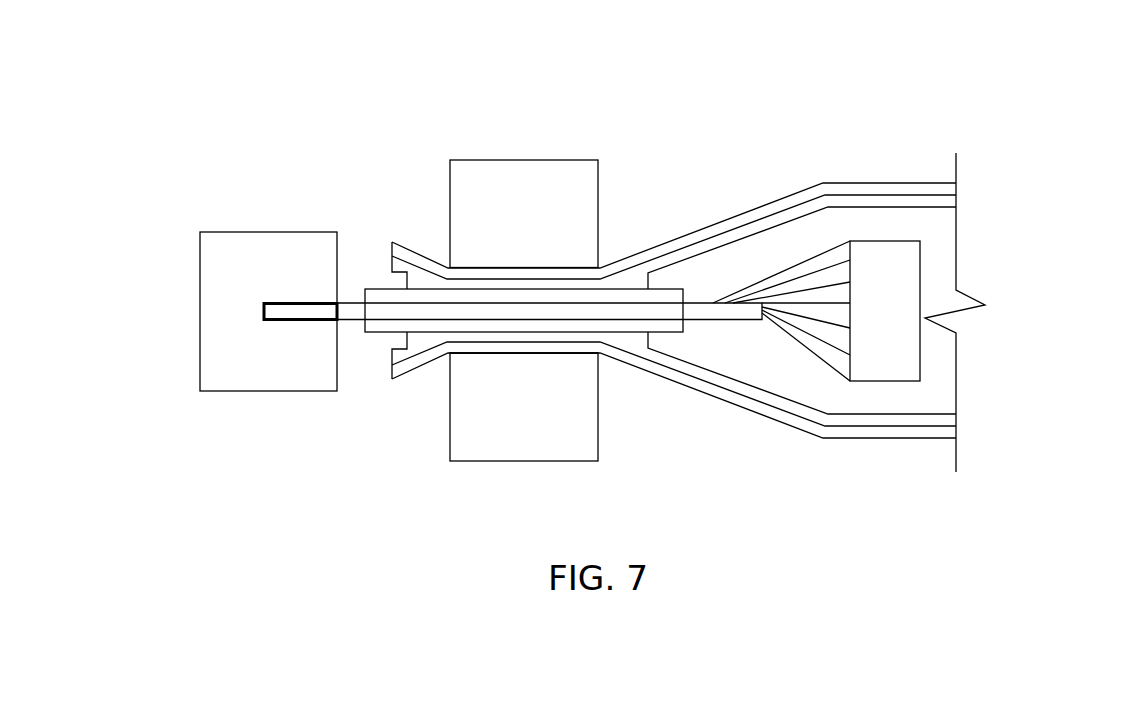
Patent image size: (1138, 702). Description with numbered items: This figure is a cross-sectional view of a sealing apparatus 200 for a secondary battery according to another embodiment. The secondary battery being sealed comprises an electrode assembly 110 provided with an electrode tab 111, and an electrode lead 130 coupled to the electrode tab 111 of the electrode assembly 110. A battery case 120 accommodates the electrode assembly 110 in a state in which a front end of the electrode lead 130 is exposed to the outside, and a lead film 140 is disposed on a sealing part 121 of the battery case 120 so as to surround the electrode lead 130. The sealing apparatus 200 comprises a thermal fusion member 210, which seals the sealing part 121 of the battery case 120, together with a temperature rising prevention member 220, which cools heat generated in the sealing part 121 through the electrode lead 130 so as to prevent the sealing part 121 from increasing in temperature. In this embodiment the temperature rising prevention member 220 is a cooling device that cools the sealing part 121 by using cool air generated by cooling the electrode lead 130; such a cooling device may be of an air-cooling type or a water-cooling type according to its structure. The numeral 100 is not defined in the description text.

The light irradiation unit 100 is at (1083, 125).
The electrode assembly 110 is at (910, 277).
The electrode tab 111 is at (803, 260).
The battery case 120 is at (950, 435).
The sealing part 121 is at (523, 355).
The electrode lead 130 is at (698, 303).
The lead film 140 is at (667, 297).
The sealing apparatus 200 is at (432, 72).
The thermal fusion member 210 is at (485, 395).
The temperature rising prevention member 220 is at (258, 247).